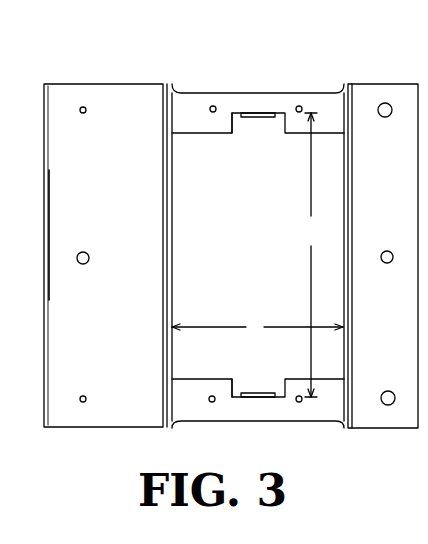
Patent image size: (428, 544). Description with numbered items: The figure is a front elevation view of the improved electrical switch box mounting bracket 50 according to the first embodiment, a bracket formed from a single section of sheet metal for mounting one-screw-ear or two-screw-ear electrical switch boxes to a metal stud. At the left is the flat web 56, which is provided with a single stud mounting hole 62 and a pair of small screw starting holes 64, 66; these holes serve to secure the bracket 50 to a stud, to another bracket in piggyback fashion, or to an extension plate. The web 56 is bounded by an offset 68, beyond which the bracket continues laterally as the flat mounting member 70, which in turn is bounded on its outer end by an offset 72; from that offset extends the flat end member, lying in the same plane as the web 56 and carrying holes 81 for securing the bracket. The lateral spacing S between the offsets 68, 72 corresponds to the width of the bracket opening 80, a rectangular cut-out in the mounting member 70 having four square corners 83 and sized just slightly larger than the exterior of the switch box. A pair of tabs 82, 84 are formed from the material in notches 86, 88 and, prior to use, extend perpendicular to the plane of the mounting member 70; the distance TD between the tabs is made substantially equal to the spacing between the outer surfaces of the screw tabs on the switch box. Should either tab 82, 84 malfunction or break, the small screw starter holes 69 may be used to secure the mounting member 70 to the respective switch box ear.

The electrical switch box mounting bracket 50 is at (231, 222).
The flat web 56 is at (124, 102).
The stud mounting hole 62 is at (83, 252).
The screw starting hole 64 is at (84, 113).
The screw starting hole 66 is at (84, 396).
The offset 68 is at (172, 271).
The screw starter hole 69 is at (213, 106).
The flat mounting member 70 is at (316, 100).
The offset 72 is at (349, 214).
The opening 80 is at (204, 152).
The holes 81 is at (383, 103).
The tab 82 is at (253, 117).
The square corner 83 is at (178, 356).
The tab 84 is at (261, 392).
The notch 86 is at (234, 117).
The notch 88 is at (249, 370).